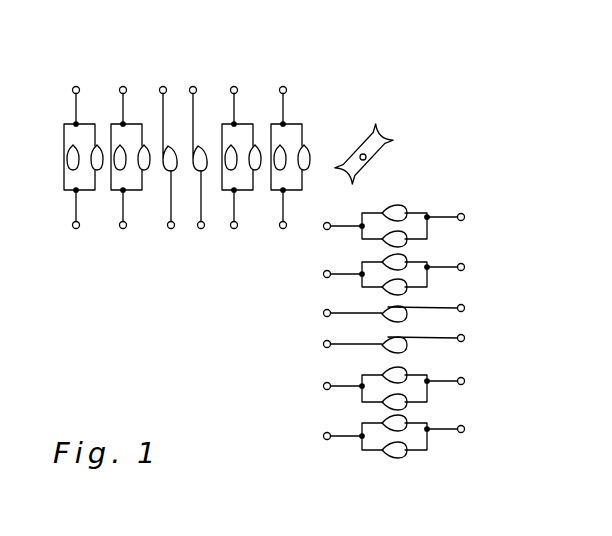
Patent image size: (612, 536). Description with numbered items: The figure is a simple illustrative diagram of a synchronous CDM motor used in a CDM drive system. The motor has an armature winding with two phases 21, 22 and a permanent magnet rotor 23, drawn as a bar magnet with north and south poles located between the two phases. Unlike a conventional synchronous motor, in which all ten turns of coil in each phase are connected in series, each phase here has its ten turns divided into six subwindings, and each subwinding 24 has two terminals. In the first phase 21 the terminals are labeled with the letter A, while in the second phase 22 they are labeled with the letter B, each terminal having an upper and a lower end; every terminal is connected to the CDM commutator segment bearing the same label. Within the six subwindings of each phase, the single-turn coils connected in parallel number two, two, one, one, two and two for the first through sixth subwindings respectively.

The phase 21 is at (156, 128).
The phase 22 is at (546, 293).
The permanent magnet rotor 23 is at (412, 105).
The subwinding 24 is at (25, 183).